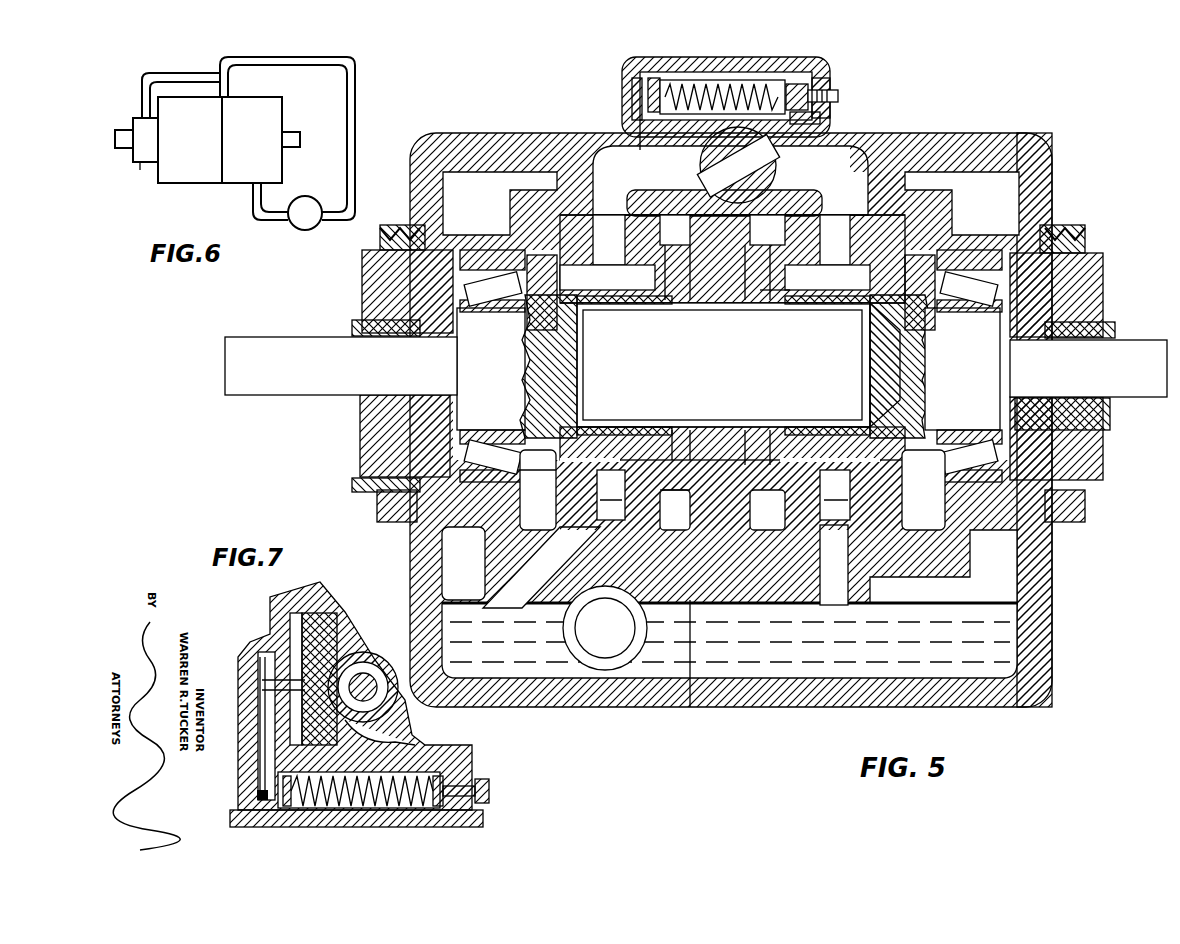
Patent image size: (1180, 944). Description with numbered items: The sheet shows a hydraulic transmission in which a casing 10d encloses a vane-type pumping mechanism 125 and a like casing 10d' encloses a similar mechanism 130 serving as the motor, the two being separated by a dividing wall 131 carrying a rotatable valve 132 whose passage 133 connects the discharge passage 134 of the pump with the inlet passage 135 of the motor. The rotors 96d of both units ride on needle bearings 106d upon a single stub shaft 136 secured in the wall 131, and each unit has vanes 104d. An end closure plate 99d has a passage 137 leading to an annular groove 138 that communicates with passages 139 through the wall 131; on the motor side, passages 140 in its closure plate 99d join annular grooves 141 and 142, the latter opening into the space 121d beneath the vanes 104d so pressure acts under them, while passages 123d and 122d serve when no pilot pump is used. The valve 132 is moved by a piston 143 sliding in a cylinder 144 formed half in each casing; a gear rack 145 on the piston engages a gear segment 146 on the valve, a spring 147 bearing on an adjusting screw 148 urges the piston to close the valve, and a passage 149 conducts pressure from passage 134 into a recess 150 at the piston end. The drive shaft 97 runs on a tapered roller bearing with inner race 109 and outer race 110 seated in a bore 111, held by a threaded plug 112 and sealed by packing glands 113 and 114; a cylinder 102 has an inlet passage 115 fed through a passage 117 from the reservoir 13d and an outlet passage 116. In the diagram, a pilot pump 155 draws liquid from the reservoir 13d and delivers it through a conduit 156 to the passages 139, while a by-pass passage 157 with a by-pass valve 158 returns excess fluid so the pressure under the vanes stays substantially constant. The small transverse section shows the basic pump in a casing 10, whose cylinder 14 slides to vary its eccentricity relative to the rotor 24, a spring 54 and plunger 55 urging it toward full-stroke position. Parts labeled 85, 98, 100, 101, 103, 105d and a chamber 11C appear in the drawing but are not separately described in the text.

In FIG. 7, the casing 10 is at (298, 592).
In FIG. 5, the casing 10d is at (714, 410).
In FIG. 6, the casing 10d is at (190, 132).
In FIG. 5, the casing 10d' is at (1041, 410).
In FIG. 6, the casing 10d' is at (252, 130).
In FIG. 5, the housing passage 11C is at (538, 492).
In FIG. 5, the fluid reservoir 13d is at (450, 572).
In FIG. 7, the cylinder 14 is at (315, 625).
In FIG. 7, the rotor 24 is at (372, 715).
In FIG. 7, the spring 54 is at (343, 812).
In FIG. 7, the plunger 55 is at (260, 692).
In FIG. 5, the output shaft 85 is at (1128, 366).
In FIG. 6, the output shaft 85 is at (290, 145).
In FIG. 5, the rotor 96d is at (600, 440).
In FIG. 5, the drive shaft 97 is at (306, 366).
In FIG. 6, the drive shaft 97 is at (122, 134).
In FIG. 5, the rotor disc 98 is at (525, 440).
In FIG. 5, the end closure plate 99d is at (722, 230).
In FIG. 5, the passage 100 is at (722, 510).
In FIG. 5, the passage 101 is at (894, 492).
In FIG. 5, the cylinder 102 is at (894, 516).
In FIG. 5, the passage 103 is at (723, 495).
In FIG. 5, the vane 104d is at (630, 300).
In FIG. 5, the rotor member 105d is at (884, 365).
In FIG. 5, the needle bearings 106d is at (630, 432).
In FIG. 5, the inner race 109 is at (528, 310).
In FIG. 5, the outer race 110 is at (488, 248).
In FIG. 5, the bore 111 is at (498, 232).
In FIG. 5, the plug 112 is at (375, 299).
In FIG. 5, the packing gland 113 is at (405, 230).
In FIG. 5, the packing gland 114 is at (402, 334).
In FIG. 5, the inlet passage 115 is at (724, 508).
In FIG. 5, the outlet passage 116 is at (609, 251).
In FIG. 5, the passage 117 is at (590, 550).
In FIG. 5, the space 121d is at (835, 240).
In FIG. 5, the passage 122d is at (600, 290).
In FIG. 5, the passage 123d is at (609, 240).
In FIG. 5, the pumping mechanism 125 is at (556, 258).
In FIG. 5, the motor 130 is at (895, 258).
In FIG. 5, the dividing wall 131 is at (752, 200).
In FIG. 5, the rotatable valve 132 is at (770, 160).
In FIG. 5, the passage 133 is at (700, 178).
In FIG. 5, the discharge passage 134 is at (612, 150).
In FIG. 5, the inlet passage 135 is at (870, 165).
In FIG. 5, the stub shaft 136 is at (723, 365).
In FIG. 5, the passage 137 is at (664, 298).
In FIG. 5, the annular groove 138 is at (712, 295).
In FIG. 5, the passages 139 is at (738, 300).
In FIG. 5, the passages 140 is at (780, 298).
In FIG. 5, the annular groove 141 is at (778, 300).
In FIG. 5, the annular groove 142 is at (827, 277).
In FIG. 5, the piston 143 is at (628, 66).
In FIG. 5, the cylinder 144 is at (820, 85).
In FIG. 5, the gear rack 145 is at (648, 104).
In FIG. 5, the gear segment 146 is at (775, 118).
In FIG. 5, the spring 147 is at (820, 120).
In FIG. 5, the adjusting screw 148 is at (838, 96).
In FIG. 5, the passage 149 is at (636, 138).
In FIG. 5, the recess 150 is at (630, 88).
In FIG. 6, the pilot pump 155 is at (152, 164).
In FIG. 6, the conduit 156 is at (202, 74).
In FIG. 6, the by-pass passage 157 is at (348, 176).
In FIG. 6, the by-pass valve 158 is at (300, 230).